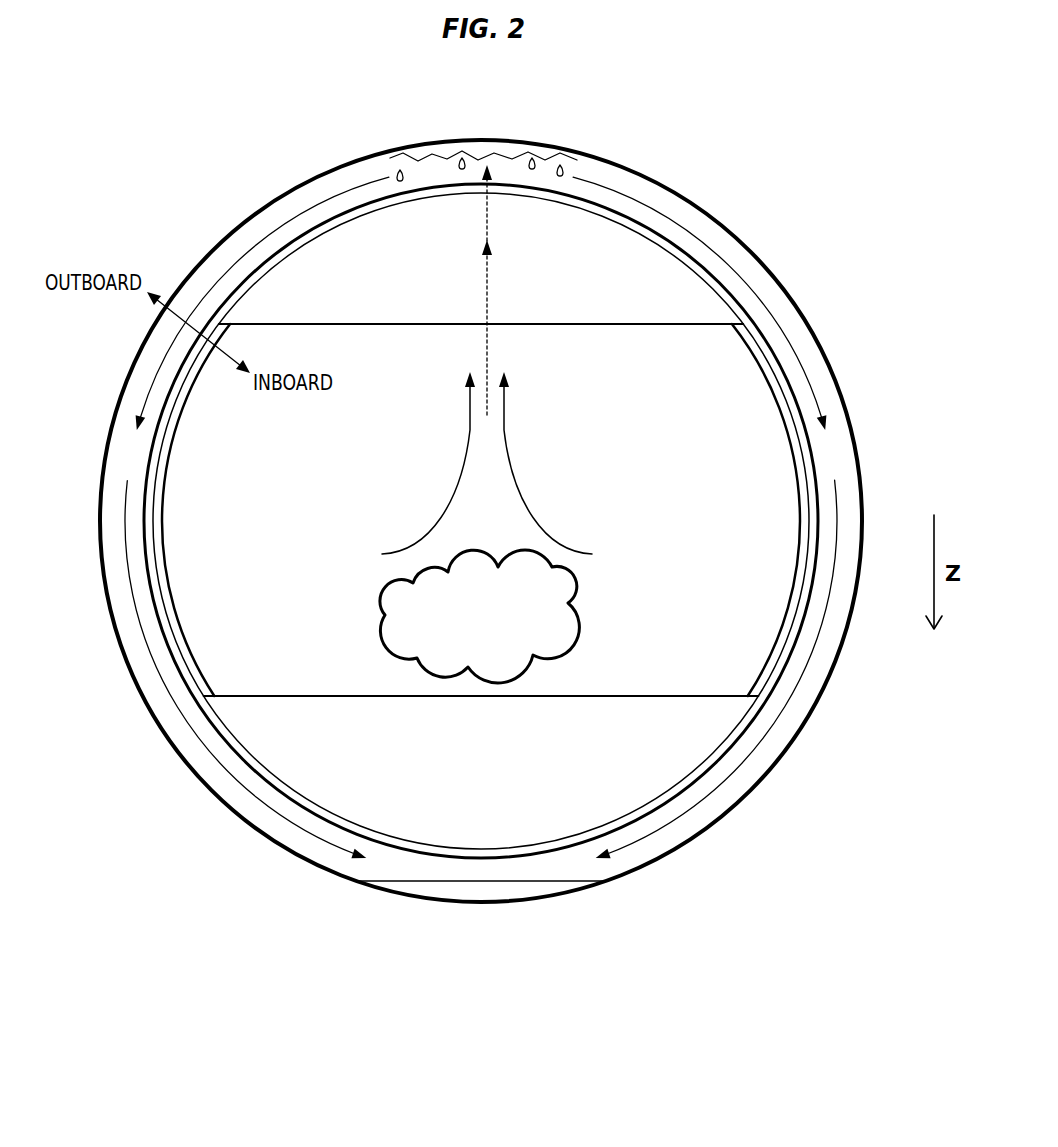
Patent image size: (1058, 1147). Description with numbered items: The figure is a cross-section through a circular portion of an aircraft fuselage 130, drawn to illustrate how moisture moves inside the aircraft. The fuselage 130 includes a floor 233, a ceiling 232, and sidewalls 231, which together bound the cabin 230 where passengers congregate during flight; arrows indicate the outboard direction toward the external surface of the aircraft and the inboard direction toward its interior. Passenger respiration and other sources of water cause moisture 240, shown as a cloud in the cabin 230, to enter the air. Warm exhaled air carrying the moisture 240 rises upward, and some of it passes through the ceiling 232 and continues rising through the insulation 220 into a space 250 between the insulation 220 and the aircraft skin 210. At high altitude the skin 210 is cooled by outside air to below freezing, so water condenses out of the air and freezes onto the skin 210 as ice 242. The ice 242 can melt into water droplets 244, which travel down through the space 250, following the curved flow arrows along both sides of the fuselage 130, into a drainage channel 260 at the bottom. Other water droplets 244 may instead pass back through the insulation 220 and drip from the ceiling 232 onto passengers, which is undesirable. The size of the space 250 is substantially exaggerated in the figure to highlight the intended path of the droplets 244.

The aircraft fuselage 130 is at (863, 817).
The aircraft skin 210 is at (778, 278).
The insulation 220 is at (818, 478).
The cabin 230 is at (326, 521).
The sidewalls 231 is at (168, 462).
The ceiling 232 is at (611, 323).
The floor 233 is at (640, 696).
The moisture 240 is at (572, 633).
The ice 242 is at (492, 148).
The water droplets 244 is at (393, 172).
The space 250 is at (842, 445).
The drainage channel 260 is at (458, 891).